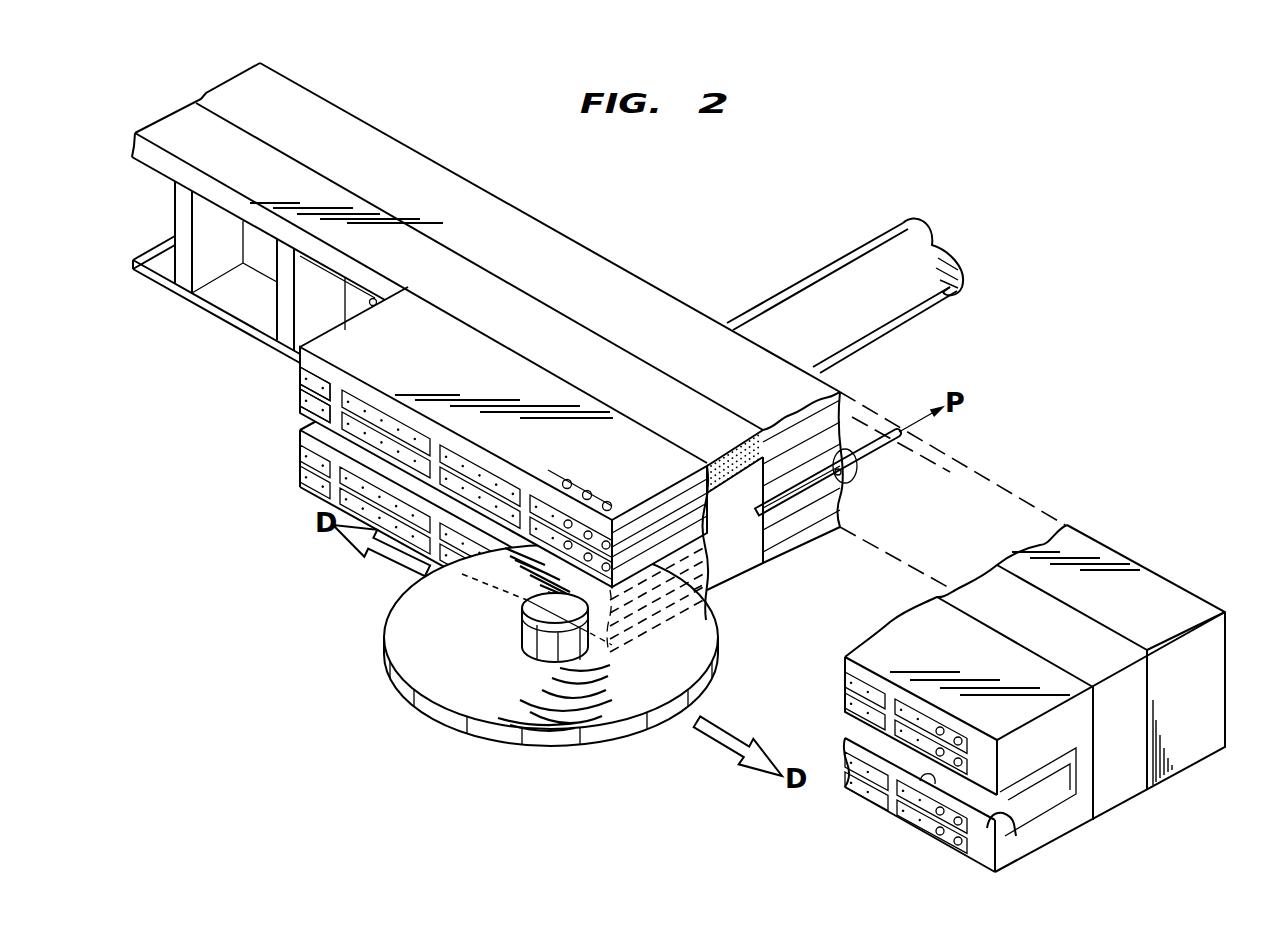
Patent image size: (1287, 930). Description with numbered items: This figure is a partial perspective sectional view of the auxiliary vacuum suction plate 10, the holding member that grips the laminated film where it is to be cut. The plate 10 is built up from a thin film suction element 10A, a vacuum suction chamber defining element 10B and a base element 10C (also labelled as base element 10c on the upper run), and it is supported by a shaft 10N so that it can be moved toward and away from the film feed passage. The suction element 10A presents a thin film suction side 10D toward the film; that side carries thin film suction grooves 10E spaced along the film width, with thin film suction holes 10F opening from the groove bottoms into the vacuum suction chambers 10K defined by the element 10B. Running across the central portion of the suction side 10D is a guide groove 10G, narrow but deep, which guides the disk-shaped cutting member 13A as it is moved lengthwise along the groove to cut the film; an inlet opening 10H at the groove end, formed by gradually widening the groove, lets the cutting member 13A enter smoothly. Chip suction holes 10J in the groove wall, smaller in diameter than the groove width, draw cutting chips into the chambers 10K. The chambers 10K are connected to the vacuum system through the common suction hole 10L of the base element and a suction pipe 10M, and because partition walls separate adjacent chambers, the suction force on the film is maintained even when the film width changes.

The auxiliary vacuum suction plate 10 is at (572, 240).
The base element 10c is at (508, 223).
The base element 10C is at (1190, 753).
The vacuum suction chamber defining element 10B is at (472, 298).
The thin film suction element 10A is at (423, 357).
The thin film suction side 10D is at (298, 362).
The thin film suction grooves 10E is at (300, 393).
The thin film suction holes 10F is at (300, 437).
The common suction hole 10L is at (369, 302).
The vacuum suction chamber 10K is at (735, 492).
The chip suction holes 10J is at (712, 545).
The suction pipe 10M is at (878, 447).
The shaft 10N is at (880, 256).
The guide groove 10G is at (927, 778).
The inlet opening 10H is at (990, 823).
The cutting member 13A is at (493, 730).